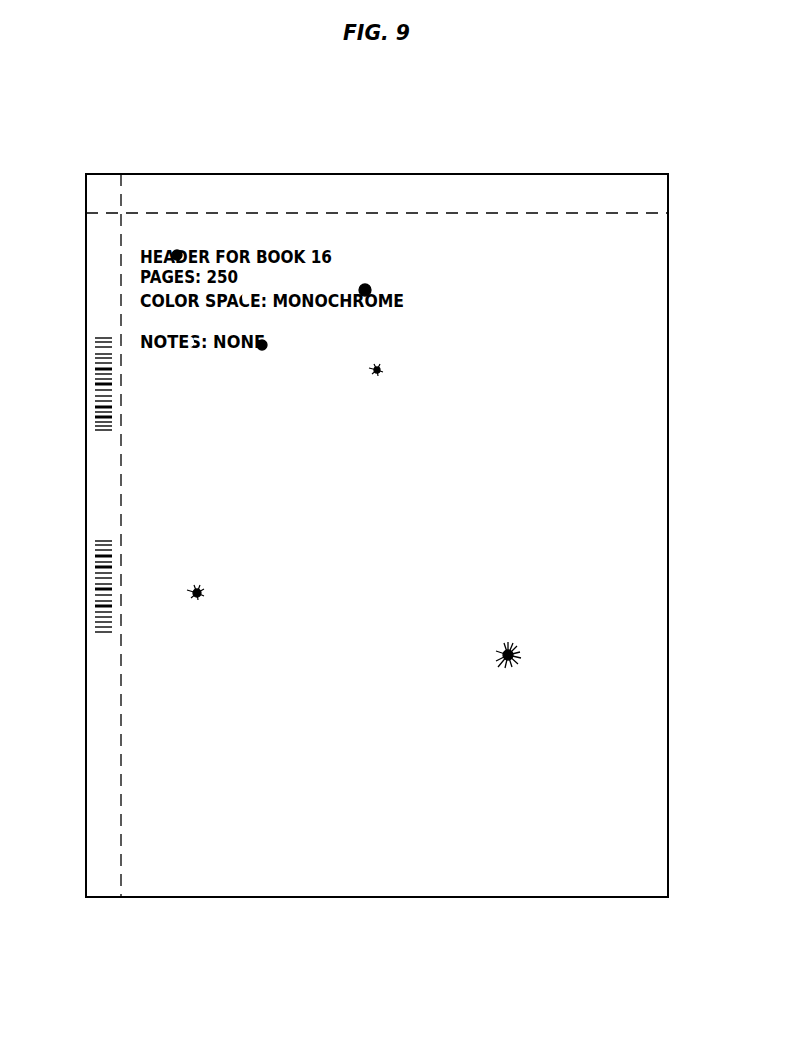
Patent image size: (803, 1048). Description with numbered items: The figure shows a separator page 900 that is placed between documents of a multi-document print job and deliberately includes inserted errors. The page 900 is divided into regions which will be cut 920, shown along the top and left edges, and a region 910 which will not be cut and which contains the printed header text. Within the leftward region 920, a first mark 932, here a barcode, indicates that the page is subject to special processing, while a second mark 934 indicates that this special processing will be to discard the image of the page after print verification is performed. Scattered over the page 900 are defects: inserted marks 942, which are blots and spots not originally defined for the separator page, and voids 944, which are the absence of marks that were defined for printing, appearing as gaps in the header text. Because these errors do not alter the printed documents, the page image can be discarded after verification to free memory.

The separator page 900 is at (515, 134).
The region which will not be cut 910 is at (652, 238).
The regions which will be cut 920 is at (652, 193).
The first mark 932 is at (90, 375).
The second mark 934 is at (90, 588).
The inserted marks 942 is at (177, 251).
The voids 944 is at (241, 310).